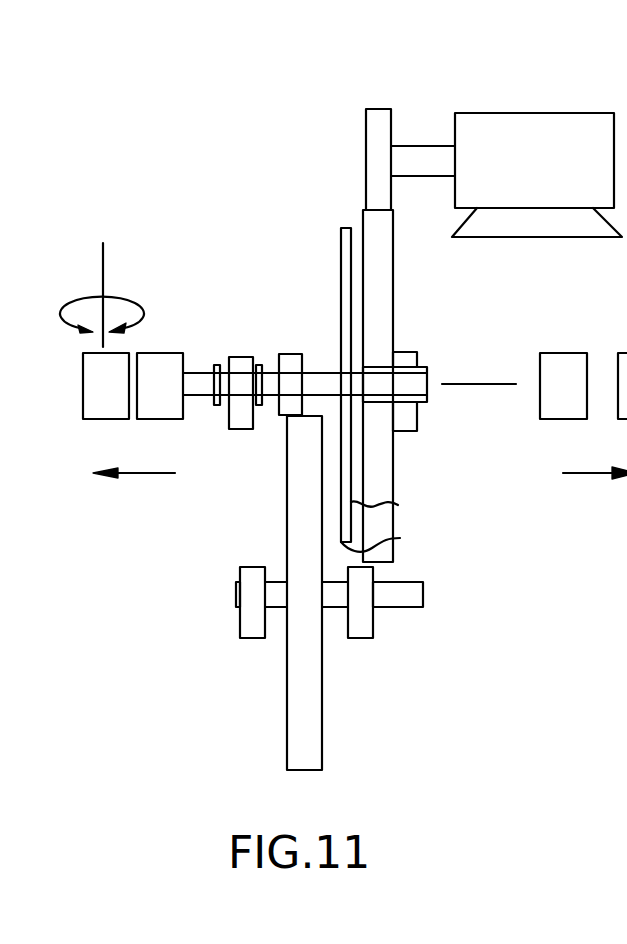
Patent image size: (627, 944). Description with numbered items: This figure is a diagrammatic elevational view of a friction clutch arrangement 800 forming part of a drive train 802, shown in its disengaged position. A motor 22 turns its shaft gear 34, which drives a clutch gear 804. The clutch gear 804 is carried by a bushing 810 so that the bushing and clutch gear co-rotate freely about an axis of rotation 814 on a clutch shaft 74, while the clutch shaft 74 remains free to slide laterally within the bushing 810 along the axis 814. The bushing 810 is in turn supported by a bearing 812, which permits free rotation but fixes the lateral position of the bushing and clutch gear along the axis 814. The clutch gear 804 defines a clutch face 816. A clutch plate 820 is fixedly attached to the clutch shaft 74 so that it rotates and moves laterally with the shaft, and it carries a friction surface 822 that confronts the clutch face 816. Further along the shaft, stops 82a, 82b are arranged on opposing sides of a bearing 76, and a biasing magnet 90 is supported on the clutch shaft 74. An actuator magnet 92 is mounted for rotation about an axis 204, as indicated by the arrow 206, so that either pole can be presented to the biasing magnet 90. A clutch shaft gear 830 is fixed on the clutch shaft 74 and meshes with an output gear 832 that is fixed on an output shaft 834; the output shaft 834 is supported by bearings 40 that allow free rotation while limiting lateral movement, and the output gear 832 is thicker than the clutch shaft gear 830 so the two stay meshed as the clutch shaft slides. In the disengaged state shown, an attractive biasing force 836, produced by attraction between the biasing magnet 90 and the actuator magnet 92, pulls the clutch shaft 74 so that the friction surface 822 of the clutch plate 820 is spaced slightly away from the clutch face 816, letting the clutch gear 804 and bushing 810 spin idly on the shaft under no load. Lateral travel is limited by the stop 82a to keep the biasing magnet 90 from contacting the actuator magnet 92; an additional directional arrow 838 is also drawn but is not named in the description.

The shaft gear 34 is at (377, 108).
The motor 22 is at (549, 179).
The clutch gear 804 is at (394, 259).
The clutch face 816 is at (363, 219).
The bearing 812 is at (402, 352).
The bushing 810 is at (423, 368).
The clutch shaft 74 is at (428, 388).
The axis of rotation 814 is at (472, 384).
The actuator magnet 92 is at (93, 419).
The biasing magnet 90 is at (160, 419).
The axis 204 is at (105, 265).
The arrow 206 is at (120, 298).
The stop 82b is at (215, 365).
The stop 82a is at (259, 365).
The bearing 76 is at (234, 429).
The clutch shaft gear 830 is at (284, 415).
The output gear 832 is at (322, 741).
The bearings 40 is at (253, 639).
The output shaft 834 is at (423, 595).
The friction surface 822 is at (398, 505).
The clutch plate 820 is at (400, 538).
The drive train 802 is at (428, 467).
The friction clutch arrangement 800 is at (475, 292).
The attractive biasing force 836 is at (145, 473).
The direction arrow 838 is at (587, 473).